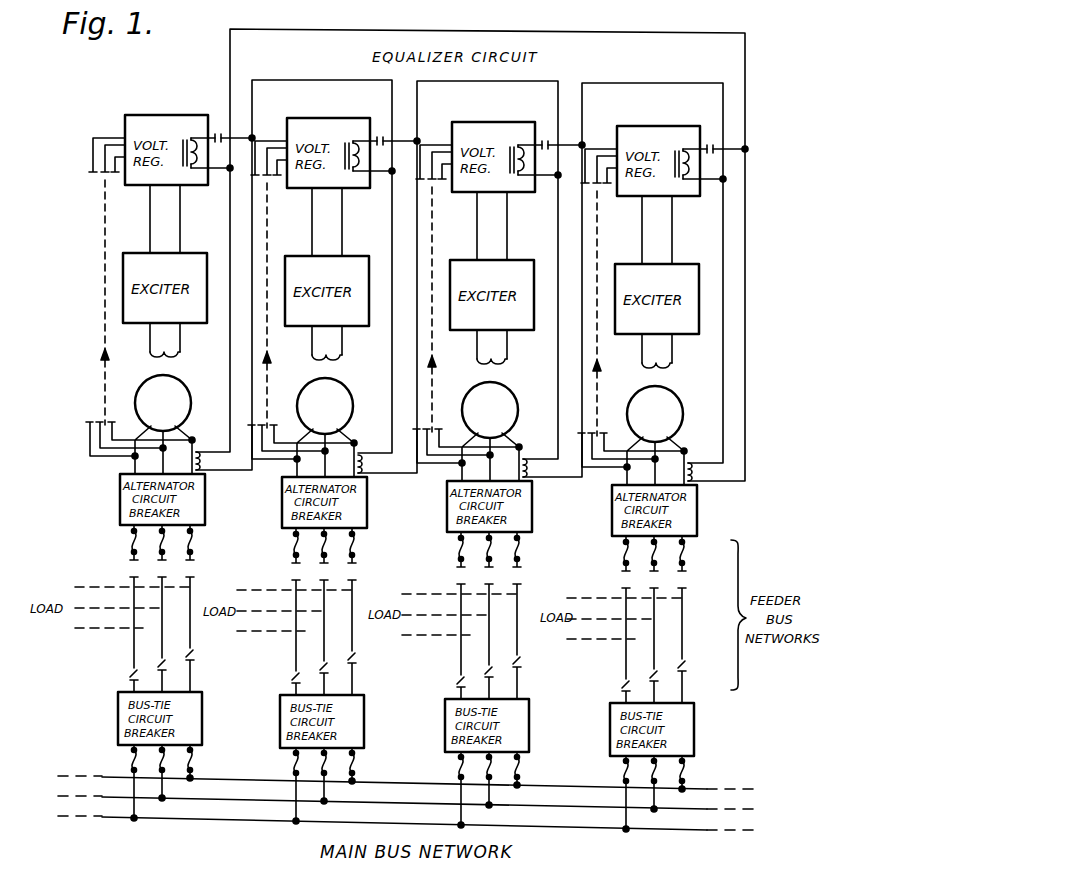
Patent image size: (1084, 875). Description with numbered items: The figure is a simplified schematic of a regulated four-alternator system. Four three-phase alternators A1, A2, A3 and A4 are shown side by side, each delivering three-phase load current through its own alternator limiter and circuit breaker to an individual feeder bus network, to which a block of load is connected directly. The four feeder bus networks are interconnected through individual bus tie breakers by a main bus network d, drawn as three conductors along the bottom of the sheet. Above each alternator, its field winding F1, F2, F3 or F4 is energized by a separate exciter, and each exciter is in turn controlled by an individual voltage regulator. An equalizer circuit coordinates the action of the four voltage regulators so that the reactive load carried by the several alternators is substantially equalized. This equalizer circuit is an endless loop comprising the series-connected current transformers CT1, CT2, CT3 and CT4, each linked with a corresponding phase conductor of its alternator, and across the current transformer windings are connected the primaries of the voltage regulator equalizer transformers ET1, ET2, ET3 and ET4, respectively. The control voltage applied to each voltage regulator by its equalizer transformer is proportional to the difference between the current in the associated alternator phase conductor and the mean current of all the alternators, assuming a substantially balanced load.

The voltage regulator equalizer transformer ET1 is at (193, 167).
The voltage regulator equalizer transformer ET2 is at (362, 182).
The voltage regulator equalizer transformer ET3 is at (527, 186).
The voltage regulator equalizer transformer ET4 is at (692, 190).
The field winding F1 is at (149, 353).
The field winding F2 is at (311, 356).
The field winding F3 is at (476, 360).
The field winding F4 is at (641, 364).
The three-phase alternator A1 is at (163, 403).
The three-phase alternator A2 is at (325, 406).
The three-phase alternator A3 is at (490, 410).
The three-phase alternator A4 is at (655, 414).
The current transformer CT1 is at (210, 464).
The current transformer CT2 is at (372, 467).
The current transformer CT3 is at (537, 471).
The current transformer CT4 is at (702, 475).
The main bus network d is at (233, 865).